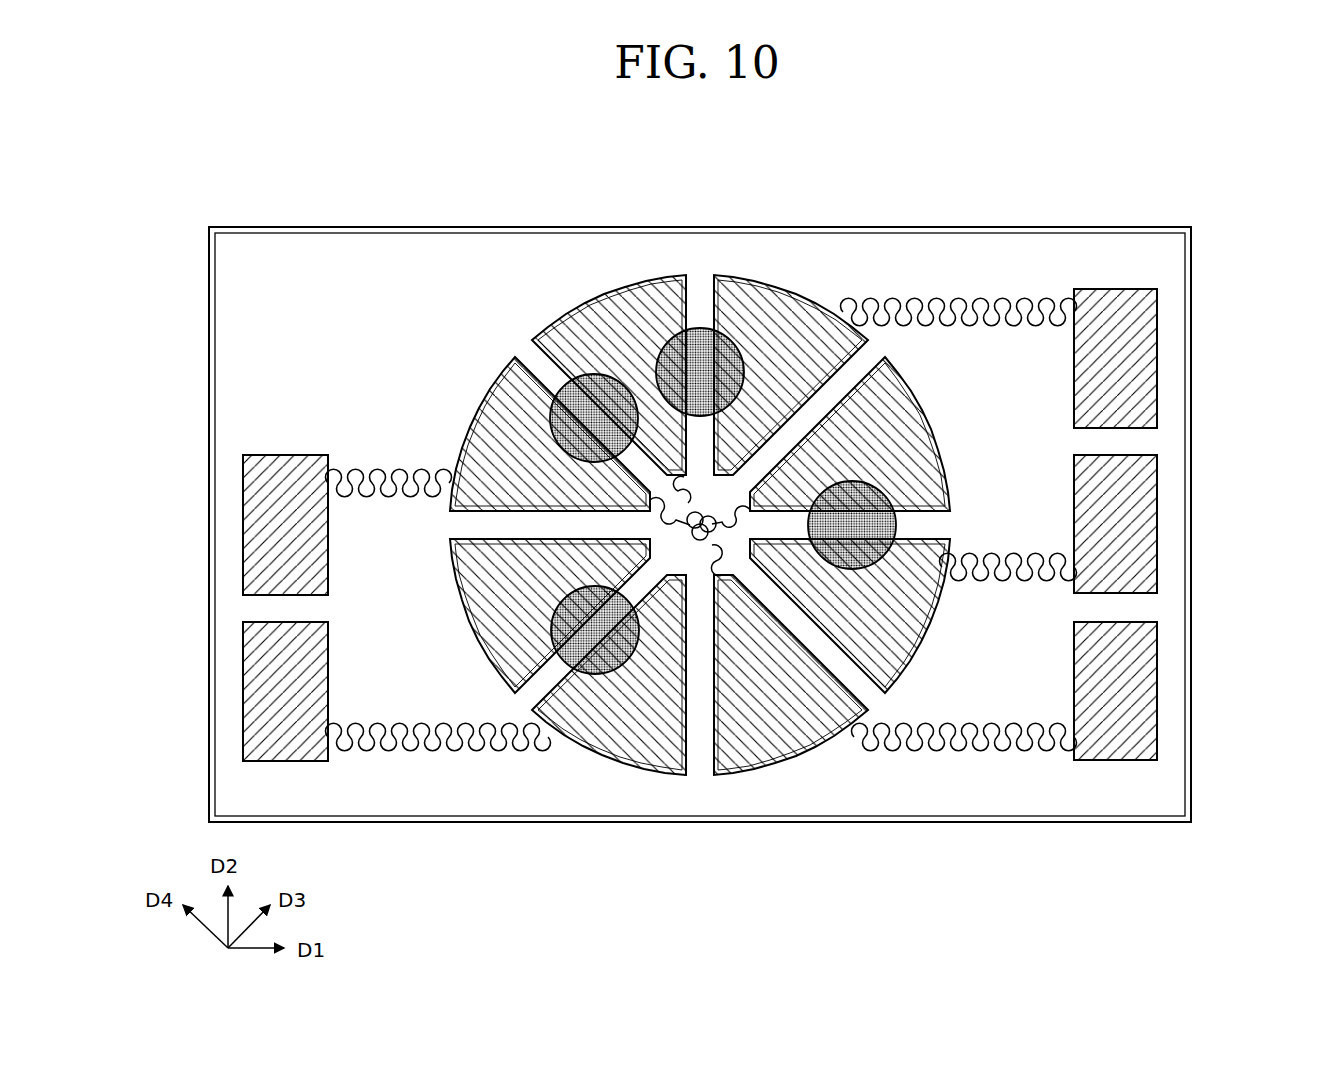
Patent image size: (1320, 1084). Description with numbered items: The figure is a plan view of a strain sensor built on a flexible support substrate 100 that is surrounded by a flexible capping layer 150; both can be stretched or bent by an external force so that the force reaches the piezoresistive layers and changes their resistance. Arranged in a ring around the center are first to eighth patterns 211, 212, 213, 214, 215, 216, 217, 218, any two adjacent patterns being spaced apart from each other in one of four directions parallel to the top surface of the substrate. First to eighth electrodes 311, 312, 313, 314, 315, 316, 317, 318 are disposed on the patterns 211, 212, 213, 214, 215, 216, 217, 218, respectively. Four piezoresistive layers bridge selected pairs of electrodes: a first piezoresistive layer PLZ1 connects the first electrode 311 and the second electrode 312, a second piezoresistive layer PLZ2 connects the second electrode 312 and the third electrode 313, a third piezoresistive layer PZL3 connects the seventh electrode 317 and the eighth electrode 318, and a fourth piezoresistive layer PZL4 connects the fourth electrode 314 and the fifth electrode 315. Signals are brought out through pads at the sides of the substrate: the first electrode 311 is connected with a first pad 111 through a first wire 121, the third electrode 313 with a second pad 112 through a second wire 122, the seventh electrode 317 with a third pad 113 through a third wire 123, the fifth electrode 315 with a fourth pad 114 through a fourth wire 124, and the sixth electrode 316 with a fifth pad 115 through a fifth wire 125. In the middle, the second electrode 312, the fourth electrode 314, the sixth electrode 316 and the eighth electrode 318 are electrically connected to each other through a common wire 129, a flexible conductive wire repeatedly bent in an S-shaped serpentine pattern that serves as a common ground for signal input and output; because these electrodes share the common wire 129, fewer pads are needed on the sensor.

The flexible substrate 100 is at (1191, 264).
The flexible capping layer 150 is at (1168, 298).
The first pad 111 is at (255, 520).
The second pad 112 is at (1150, 352).
The third pad 113 is at (255, 688).
The fourth pad 114 is at (1150, 520).
The fifth pad 115 is at (1150, 686).
The first wire 121 is at (393, 468).
The second wire 122 is at (958, 300).
The third wire 123 is at (388, 753).
The fourth wire 124 is at (1005, 552).
The fifth wire 125 is at (1018, 753).
The common wire 129 is at (690, 540).
The first pattern 211 is at (512, 362).
The second pattern 212 is at (566, 314).
The third pattern 213 is at (788, 298).
The fourth pattern 214 is at (880, 365).
The fifth pattern 215 is at (872, 690).
The sixth pattern 216 is at (790, 772).
The seventh pattern 217 is at (574, 742).
The eighth pattern 218 is at (512, 693).
The first electrode 311 is at (547, 340).
The second electrode 312 is at (609, 308).
The third electrode 313 is at (791, 308).
The fourth electrode 314 is at (850, 340).
The fifth electrode 315 is at (850, 722).
The sixth electrode 316 is at (791, 740).
The seventh electrode 317 is at (609, 740).
The eighth electrode 318 is at (550, 709).
The first piezoresistive layer PLZ1 is at (605, 392).
The second piezoresistive layer PLZ2 is at (702, 340).
The third piezoresistive layer PZL3 is at (610, 662).
The fourth piezoresistive layer PZL4 is at (837, 548).